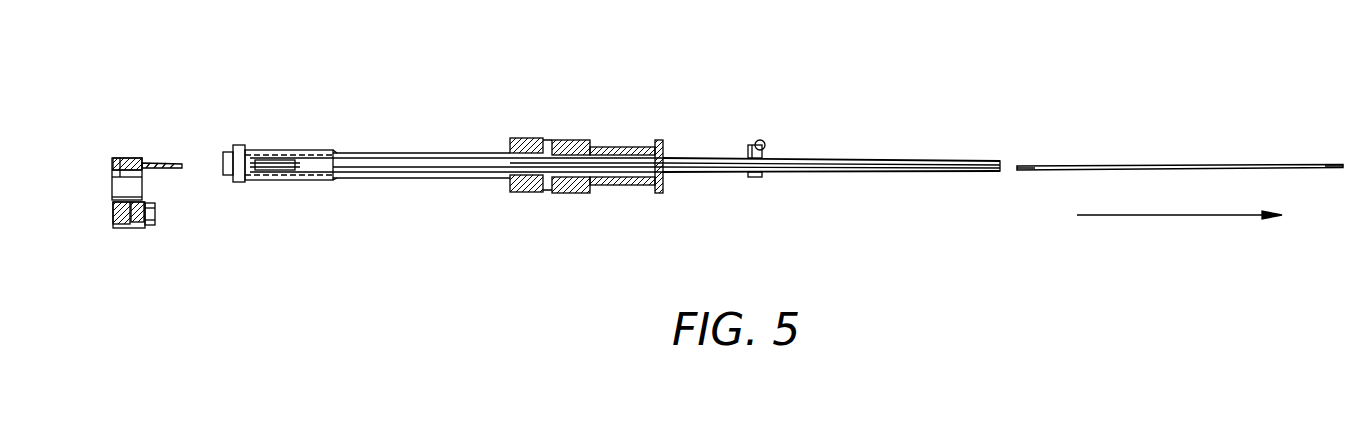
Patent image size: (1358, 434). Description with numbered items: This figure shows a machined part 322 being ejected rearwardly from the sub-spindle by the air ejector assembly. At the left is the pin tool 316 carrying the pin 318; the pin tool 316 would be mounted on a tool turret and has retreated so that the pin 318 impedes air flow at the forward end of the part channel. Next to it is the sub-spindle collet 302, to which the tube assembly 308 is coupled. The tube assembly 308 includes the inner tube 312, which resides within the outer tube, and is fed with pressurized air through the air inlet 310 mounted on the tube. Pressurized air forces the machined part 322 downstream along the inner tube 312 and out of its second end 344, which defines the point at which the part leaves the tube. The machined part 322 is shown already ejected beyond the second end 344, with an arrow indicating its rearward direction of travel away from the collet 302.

The sub-spindle collet 302 is at (233, 150).
The tube assembly 308 is at (718, 173).
The air inlet 310 is at (755, 142).
The inner tube 312 is at (857, 172).
The pin tool 316 is at (112, 168).
The pin 318 is at (158, 163).
The machined part 322 is at (1180, 167).
The second end 344 is at (1000, 176).